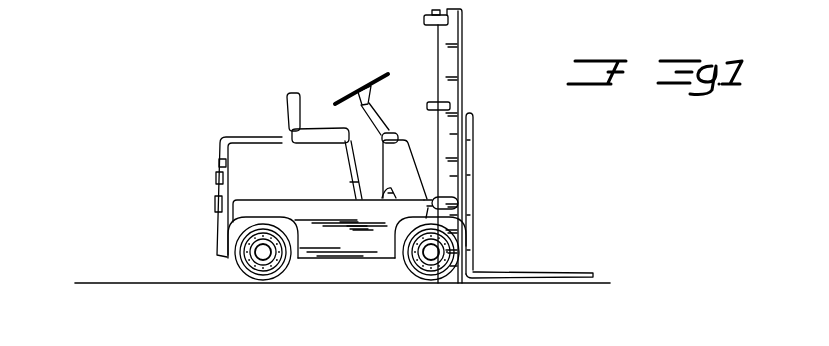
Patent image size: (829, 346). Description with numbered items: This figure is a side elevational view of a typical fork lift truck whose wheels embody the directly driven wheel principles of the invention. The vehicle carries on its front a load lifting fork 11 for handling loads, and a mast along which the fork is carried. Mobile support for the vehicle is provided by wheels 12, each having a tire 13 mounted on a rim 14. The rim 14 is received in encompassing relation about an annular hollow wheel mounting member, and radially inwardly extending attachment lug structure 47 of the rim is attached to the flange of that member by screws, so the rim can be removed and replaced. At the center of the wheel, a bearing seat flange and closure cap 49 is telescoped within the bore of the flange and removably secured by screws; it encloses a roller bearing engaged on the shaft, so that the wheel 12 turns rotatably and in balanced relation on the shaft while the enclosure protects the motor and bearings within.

The load lifting fork 11 is at (520, 273).
The wheels 12 is at (236, 280).
The tires 13 is at (275, 261).
The rims 14 is at (262, 258).
The attachment lug structure 47 is at (278, 268).
The bearing seat flange and closure cap 49 is at (262, 253).